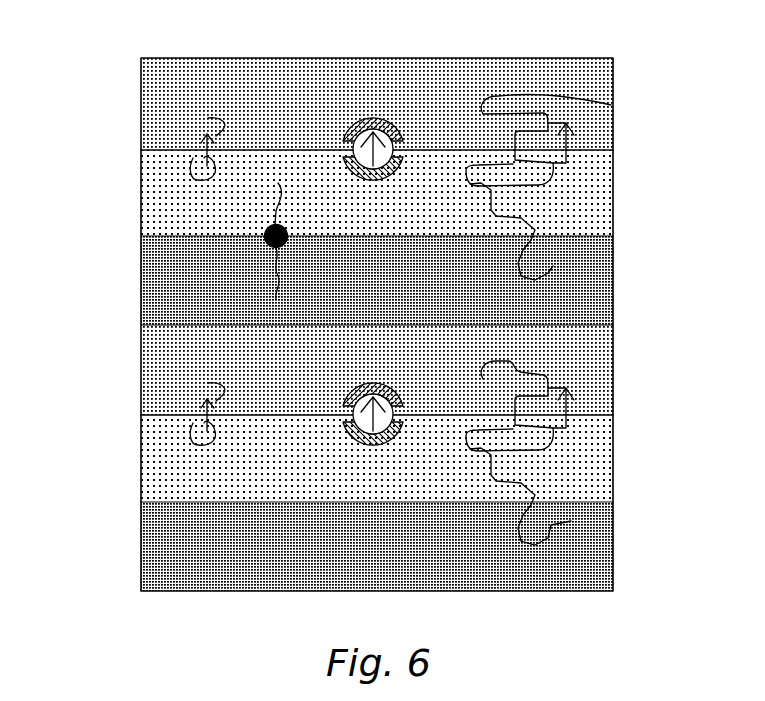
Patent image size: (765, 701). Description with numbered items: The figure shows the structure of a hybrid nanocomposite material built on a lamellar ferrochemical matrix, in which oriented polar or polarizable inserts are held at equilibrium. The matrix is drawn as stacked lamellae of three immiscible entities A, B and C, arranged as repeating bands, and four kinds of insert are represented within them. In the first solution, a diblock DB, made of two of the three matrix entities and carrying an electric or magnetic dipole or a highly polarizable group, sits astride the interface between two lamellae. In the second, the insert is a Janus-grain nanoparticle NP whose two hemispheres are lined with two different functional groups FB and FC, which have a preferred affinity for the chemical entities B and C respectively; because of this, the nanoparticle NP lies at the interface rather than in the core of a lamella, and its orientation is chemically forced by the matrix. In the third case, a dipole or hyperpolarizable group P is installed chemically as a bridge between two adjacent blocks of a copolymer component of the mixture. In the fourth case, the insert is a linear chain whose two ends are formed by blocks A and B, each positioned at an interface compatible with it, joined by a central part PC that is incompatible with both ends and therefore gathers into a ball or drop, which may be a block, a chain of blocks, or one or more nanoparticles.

The immiscible entity C is at (132, 88).
The immiscible entity B is at (132, 188).
The immiscible entity A is at (132, 270).
The diblock DB is at (196, 148).
The central part PC is at (258, 222).
The functional group FC is at (341, 116).
The functional group FB is at (395, 171).
The nanoparticle NP is at (390, 116).
The dipole or hyperpolarizable group P is at (558, 133).